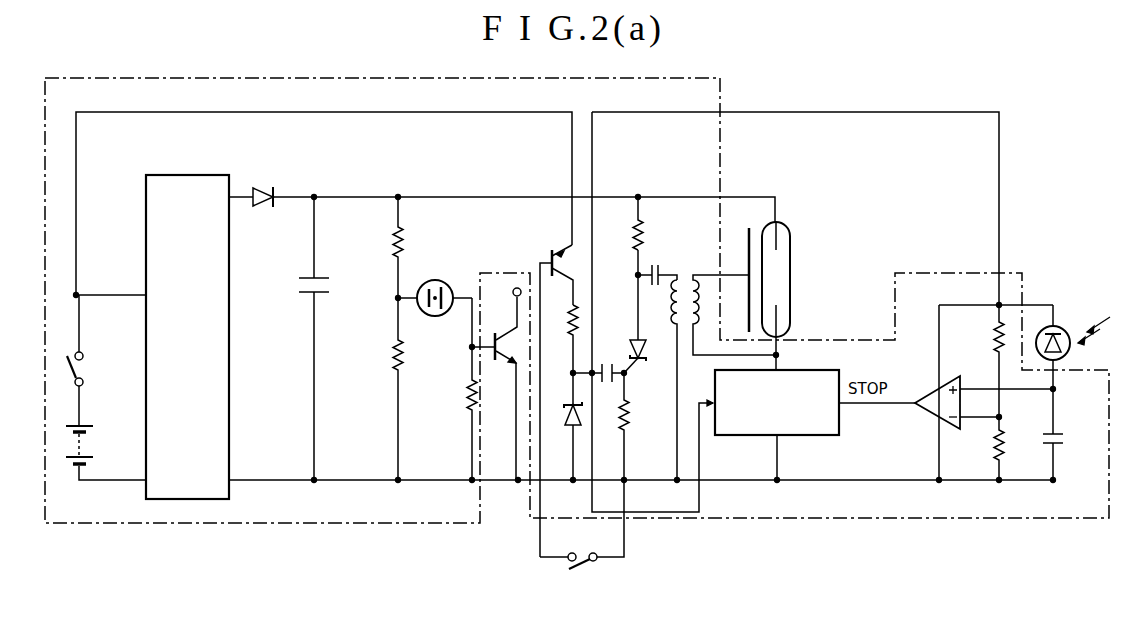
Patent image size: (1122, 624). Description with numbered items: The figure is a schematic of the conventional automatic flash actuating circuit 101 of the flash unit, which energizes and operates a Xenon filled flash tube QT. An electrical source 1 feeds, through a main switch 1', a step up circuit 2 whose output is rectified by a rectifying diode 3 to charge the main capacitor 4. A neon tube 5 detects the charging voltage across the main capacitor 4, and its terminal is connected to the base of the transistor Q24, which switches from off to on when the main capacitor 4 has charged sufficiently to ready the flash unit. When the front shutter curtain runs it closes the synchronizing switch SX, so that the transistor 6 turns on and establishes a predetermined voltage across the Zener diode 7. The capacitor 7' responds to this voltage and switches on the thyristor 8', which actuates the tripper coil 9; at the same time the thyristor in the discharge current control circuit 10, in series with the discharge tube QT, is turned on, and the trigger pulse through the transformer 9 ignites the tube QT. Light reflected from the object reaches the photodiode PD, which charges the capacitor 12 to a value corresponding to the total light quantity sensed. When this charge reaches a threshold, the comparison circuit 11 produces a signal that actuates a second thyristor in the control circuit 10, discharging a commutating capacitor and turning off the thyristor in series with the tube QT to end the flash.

The electrical source 1 is at (87, 425).
The main switch 1' is at (86, 340).
The step up circuit 2 is at (187, 337).
The rectifying diode 3 is at (262, 188).
The main capacitor 4 is at (330, 286).
The neon tube 5 is at (435, 295).
The transistor 6 is at (551, 252).
The Zener diode 7 is at (565, 442).
The capacitor 7' is at (600, 360).
The thyristor 8' is at (644, 311).
The tripper coil 9 is at (704, 267).
The discharge current control circuit 10 is at (777, 426).
The comparison circuit 11 is at (934, 397).
The capacitor 12 is at (1064, 439).
The automatic flash actuating circuit 101 is at (722, 96).
The transistor Q24 is at (490, 360).
The flash tube QT is at (790, 280).
The photodiode PD is at (1060, 327).
The synchronizing switch SX is at (582, 524).